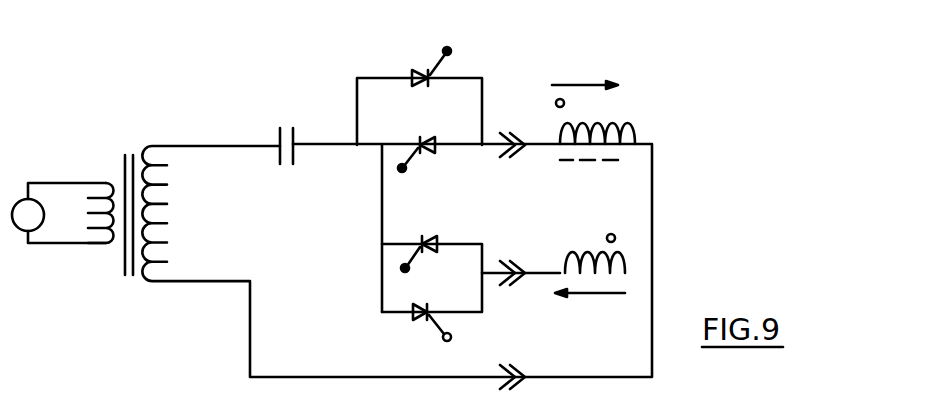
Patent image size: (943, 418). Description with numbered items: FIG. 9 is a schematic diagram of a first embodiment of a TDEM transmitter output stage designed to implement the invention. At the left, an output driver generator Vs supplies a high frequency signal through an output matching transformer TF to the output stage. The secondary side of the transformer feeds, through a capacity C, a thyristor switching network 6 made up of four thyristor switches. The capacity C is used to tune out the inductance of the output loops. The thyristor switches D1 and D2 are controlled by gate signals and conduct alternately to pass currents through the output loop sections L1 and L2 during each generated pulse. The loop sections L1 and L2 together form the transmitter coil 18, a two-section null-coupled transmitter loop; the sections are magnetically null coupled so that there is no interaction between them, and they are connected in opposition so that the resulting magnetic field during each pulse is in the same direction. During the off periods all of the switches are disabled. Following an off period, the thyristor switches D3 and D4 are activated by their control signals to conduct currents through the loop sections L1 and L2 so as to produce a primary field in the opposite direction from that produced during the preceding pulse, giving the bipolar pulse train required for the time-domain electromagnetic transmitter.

The thyristor switching circuit 6 is at (458, 194).
The transmitter coil 18 is at (659, 189).
The output driver generator Vs is at (59, 188).
The output matching transformer TF is at (131, 143).
The capacity C is at (287, 168).
The thyristor switch D1 is at (431, 51).
The thyristor switch D2 is at (428, 236).
The thyristor switch D3 is at (438, 160).
The thyristor switch D4 is at (432, 335).
The output loop section L1 is at (593, 139).
The output loop section L2 is at (590, 254).